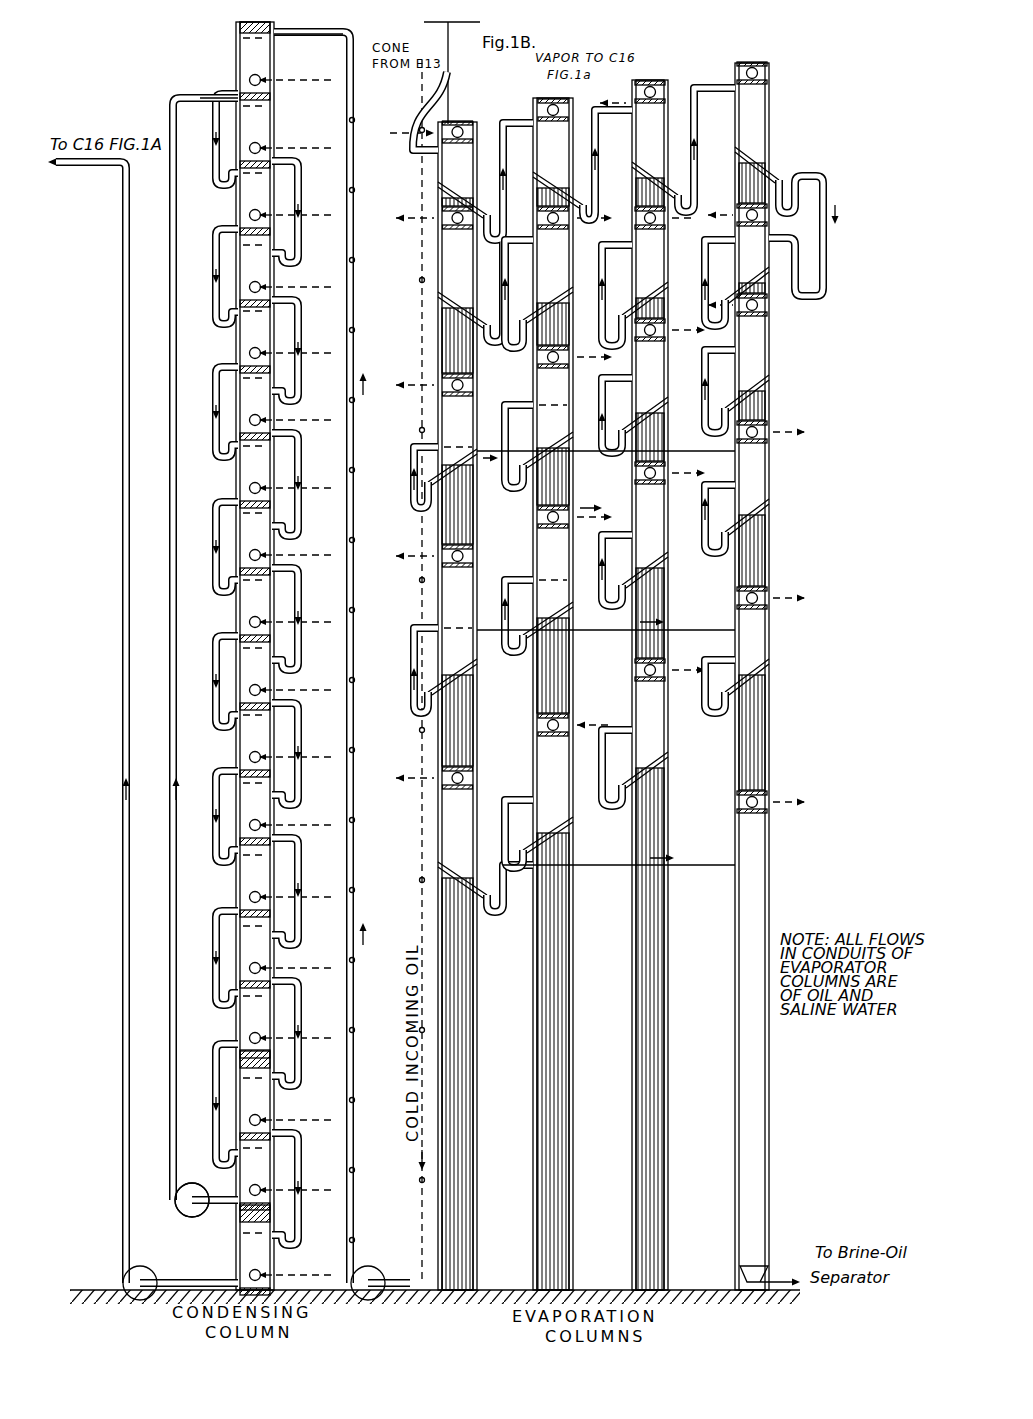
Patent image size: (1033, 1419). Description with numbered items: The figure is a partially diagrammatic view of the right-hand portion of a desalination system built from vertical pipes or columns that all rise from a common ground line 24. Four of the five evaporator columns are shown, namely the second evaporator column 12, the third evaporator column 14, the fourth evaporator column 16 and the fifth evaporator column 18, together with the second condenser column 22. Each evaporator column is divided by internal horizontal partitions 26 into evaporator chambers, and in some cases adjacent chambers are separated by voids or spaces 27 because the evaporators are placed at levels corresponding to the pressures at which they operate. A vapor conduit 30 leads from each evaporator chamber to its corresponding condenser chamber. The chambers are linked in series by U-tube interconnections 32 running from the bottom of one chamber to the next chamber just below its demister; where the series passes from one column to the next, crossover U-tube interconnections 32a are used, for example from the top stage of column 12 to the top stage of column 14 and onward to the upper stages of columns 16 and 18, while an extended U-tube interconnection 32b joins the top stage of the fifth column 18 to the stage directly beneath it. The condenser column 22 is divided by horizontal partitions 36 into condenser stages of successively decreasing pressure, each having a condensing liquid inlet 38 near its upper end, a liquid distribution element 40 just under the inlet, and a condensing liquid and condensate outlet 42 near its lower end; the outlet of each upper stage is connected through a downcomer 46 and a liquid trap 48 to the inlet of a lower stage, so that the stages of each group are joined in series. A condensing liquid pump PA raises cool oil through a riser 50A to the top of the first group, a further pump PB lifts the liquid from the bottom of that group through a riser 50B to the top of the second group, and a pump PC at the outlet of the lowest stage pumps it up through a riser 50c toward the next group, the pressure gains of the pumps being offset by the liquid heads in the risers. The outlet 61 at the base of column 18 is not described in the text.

The second evaporator column 12 is at (436, 118).
The third evaporator column 14 is at (530, 94).
The fourth evaporator column 16 is at (648, 76).
The fifth evaporator column 18 is at (752, 58).
The condenser column 22 is at (228, 52).
The ground line 24 is at (86, 1289).
The horizontal partition 26 is at (440, 186).
The void or space 27 is at (441, 330).
The vapor conduit 30 is at (728, 80).
The U-tube interconnection 32 is at (508, 352).
The crossover U-tube interconnection 32a is at (428, 152).
The extended U-tube interconnection 32b is at (827, 266).
The horizontal partition 36 is at (276, 97).
The condensing liquid inlet 38 is at (278, 36).
The liquid distribution element 40 is at (238, 44).
The condensing liquid and condensate outlet 42 is at (232, 96).
The downcomer 46 is at (300, 1205).
The liquid trap 48 is at (300, 1238).
The riser 50A is at (355, 1068).
The riser 50B is at (172, 872).
The riser 50c is at (122, 968).
The brine outlet 61 is at (777, 1281).
The condensing liquid pump PA is at (370, 1270).
The condensing liquid pump PB is at (178, 1210).
The condensing liquid pump PC is at (152, 1275).